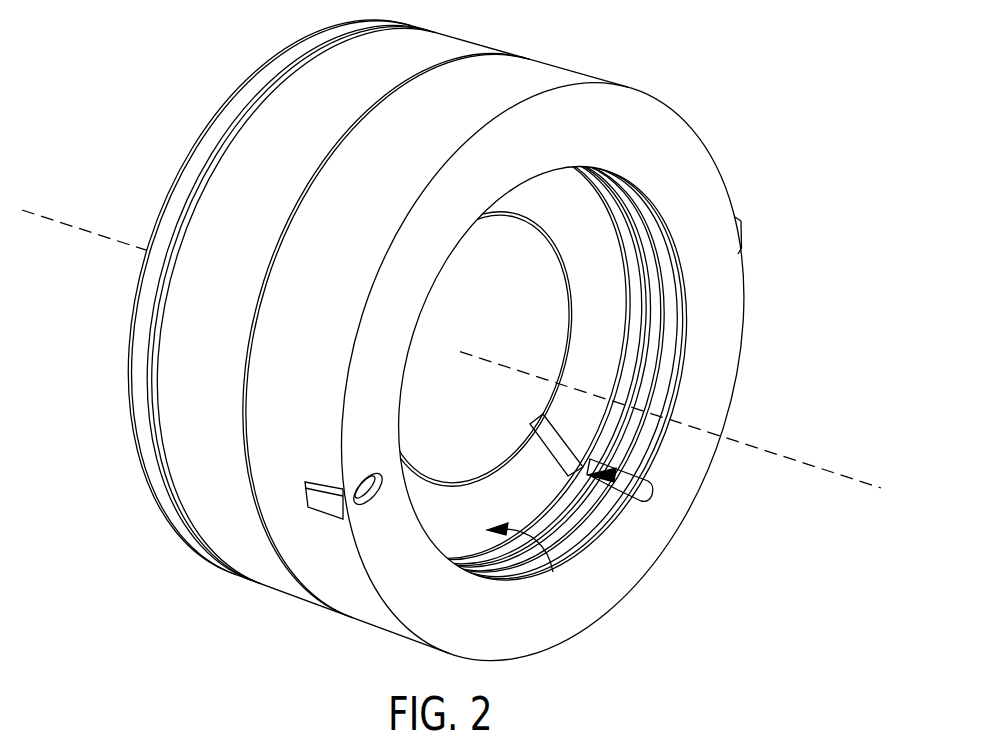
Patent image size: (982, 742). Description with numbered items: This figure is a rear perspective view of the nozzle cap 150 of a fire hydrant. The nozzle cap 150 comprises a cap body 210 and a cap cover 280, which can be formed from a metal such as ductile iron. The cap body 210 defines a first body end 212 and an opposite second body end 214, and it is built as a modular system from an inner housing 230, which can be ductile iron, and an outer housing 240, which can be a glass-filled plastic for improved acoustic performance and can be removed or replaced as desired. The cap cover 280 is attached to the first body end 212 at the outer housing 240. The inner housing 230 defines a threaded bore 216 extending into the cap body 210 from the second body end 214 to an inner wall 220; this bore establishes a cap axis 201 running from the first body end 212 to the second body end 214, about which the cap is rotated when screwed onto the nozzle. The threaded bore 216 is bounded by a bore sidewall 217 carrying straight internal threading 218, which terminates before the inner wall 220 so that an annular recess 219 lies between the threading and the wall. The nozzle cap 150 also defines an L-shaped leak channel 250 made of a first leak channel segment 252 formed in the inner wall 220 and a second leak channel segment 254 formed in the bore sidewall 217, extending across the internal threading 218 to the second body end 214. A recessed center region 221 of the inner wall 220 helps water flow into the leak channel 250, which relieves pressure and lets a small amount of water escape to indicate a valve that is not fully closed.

The nozzle cap 150 is at (770, 76).
The cap axis 201 is at (845, 478).
The cap body 210 is at (637, 84).
The first body end 212 is at (277, 87).
The second body end 214 is at (731, 305).
The threaded bore 216 is at (541, 558).
The bore sidewall 217 is at (639, 220).
The internal threading 218 is at (654, 263).
The annular recess 219 is at (601, 434).
The inner wall 220 is at (522, 303).
The recessed center region 221 is at (522, 353).
The inner housing 230 is at (277, 418).
The outer housing 240 is at (177, 399).
The leak channel 250 is at (593, 481).
The first leak channel segment 252 is at (548, 437).
The second leak channel segment 254 is at (641, 489).
The cap cover 280 is at (207, 150).